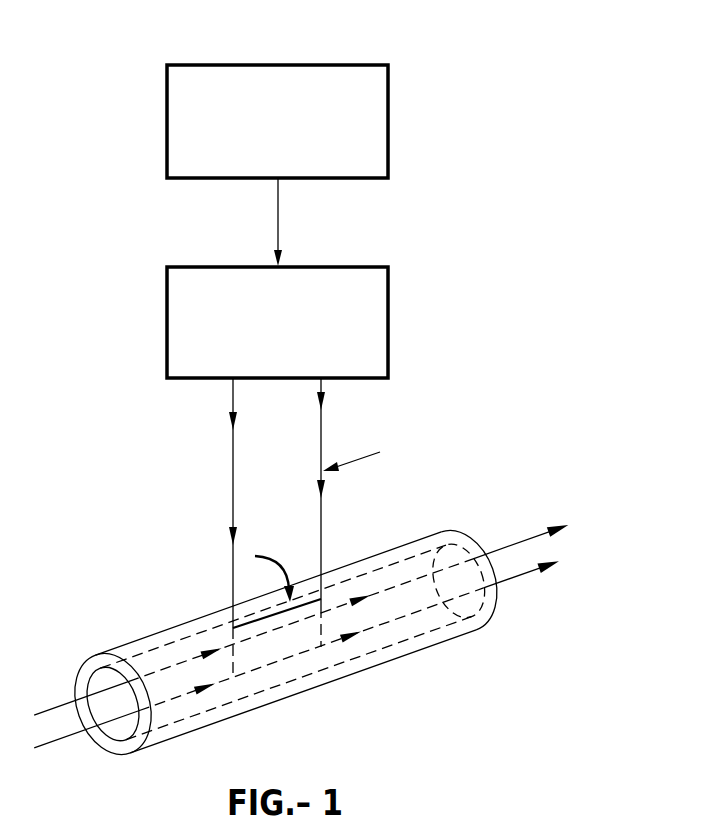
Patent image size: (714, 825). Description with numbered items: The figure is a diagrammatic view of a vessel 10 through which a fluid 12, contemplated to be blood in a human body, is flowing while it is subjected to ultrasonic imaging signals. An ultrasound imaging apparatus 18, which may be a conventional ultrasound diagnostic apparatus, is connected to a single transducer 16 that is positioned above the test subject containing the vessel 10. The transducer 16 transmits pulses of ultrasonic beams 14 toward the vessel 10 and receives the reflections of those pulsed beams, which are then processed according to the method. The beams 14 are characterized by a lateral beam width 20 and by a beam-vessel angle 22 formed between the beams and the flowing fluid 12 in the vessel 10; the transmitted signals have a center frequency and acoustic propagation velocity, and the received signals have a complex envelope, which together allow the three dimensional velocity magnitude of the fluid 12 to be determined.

The vessel 10 is at (455, 640).
The fluid 12 is at (513, 580).
The beams 14 is at (220, 453).
The transducer 16 is at (352, 267).
The ultrasound imaging apparatus 18 is at (352, 65).
The lateral beam width 20 is at (218, 510).
The beam-vessel angle 22 is at (250, 560).